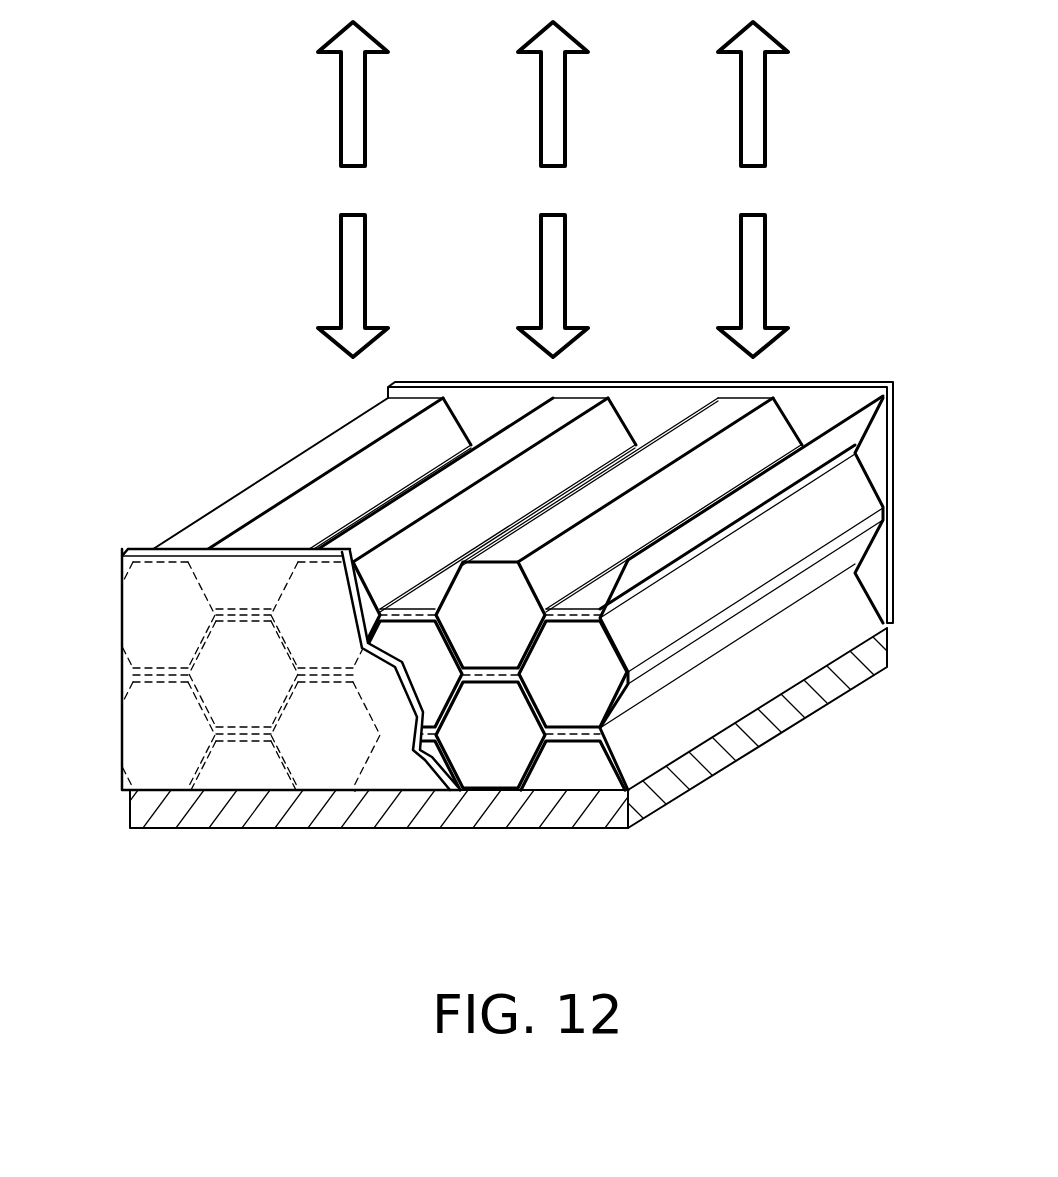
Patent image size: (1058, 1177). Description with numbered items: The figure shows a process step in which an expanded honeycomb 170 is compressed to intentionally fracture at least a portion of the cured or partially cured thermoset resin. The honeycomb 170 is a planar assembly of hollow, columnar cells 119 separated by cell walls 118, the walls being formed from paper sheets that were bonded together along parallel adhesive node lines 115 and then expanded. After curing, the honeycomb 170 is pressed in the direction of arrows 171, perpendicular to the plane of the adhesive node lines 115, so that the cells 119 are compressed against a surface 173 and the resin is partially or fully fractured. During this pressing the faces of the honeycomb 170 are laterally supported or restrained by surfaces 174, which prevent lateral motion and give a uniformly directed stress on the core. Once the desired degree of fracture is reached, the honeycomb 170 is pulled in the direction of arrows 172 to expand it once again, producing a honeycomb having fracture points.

The adhesive node lines 115 is at (487, 675).
The cell walls 118 is at (847, 492).
The cells 119 is at (507, 632).
The expanded honeycomb 170 is at (502, 608).
The arrows 171 is at (366, 280).
The arrows 172 is at (366, 103).
The surface 173 is at (311, 812).
The surfaces 174 is at (834, 399).